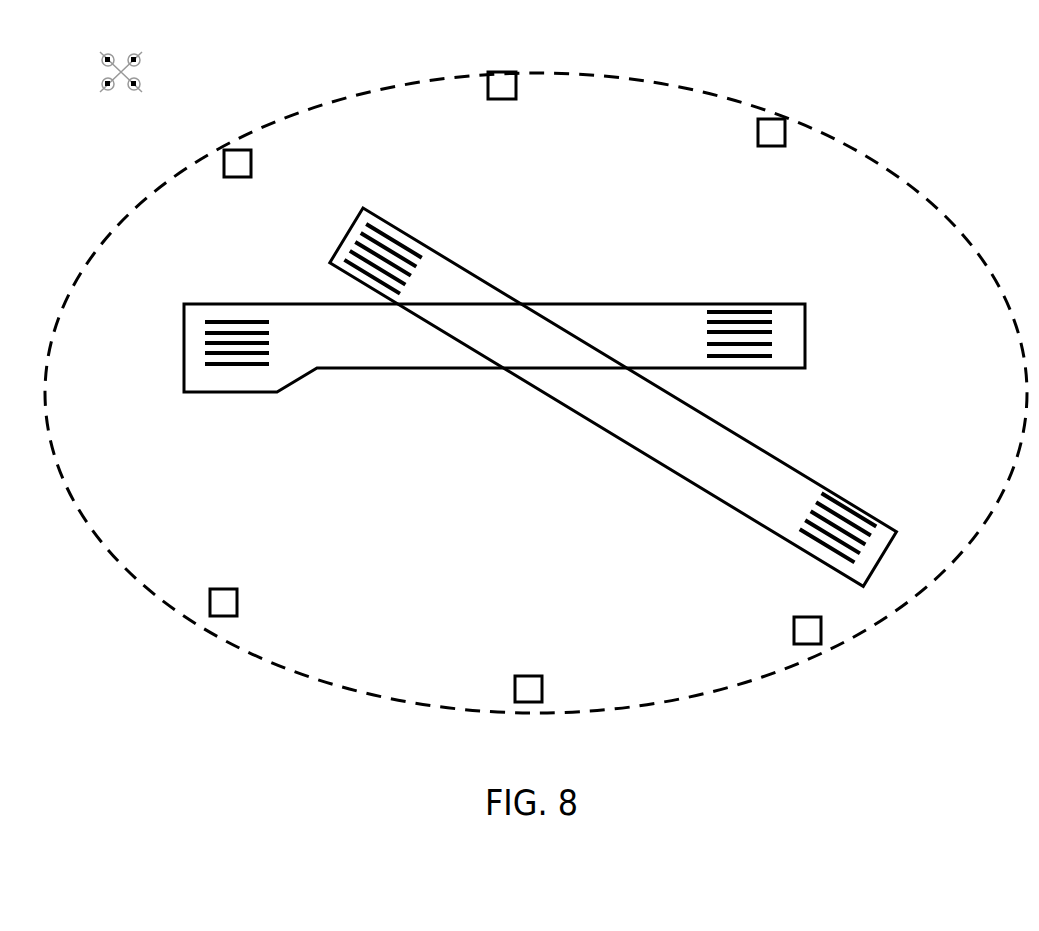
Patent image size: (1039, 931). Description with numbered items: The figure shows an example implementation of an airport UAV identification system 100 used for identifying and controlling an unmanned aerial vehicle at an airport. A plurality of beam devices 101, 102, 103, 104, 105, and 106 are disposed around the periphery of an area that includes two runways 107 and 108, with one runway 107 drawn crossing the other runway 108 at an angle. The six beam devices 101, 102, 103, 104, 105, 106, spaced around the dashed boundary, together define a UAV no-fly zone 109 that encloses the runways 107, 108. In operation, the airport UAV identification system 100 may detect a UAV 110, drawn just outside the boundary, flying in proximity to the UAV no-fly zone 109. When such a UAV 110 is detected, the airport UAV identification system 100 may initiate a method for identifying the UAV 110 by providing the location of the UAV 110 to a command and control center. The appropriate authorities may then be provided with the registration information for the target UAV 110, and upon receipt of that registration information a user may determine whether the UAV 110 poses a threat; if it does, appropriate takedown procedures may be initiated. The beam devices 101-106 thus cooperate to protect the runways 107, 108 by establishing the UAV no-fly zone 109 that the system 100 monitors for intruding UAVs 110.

The airport UAV identification system 100 is at (500, 30).
The beam device 101 is at (503, 100).
The beam device 102 is at (252, 161).
The beam device 103 is at (239, 601).
The beam device 104 is at (514, 690).
The beam device 105 is at (795, 630).
The beam device 106 is at (772, 148).
The runway 107 is at (640, 451).
The runway 108 is at (640, 302).
The UAV no-fly zone 109 is at (935, 200).
The UAV 110 is at (155, 72).